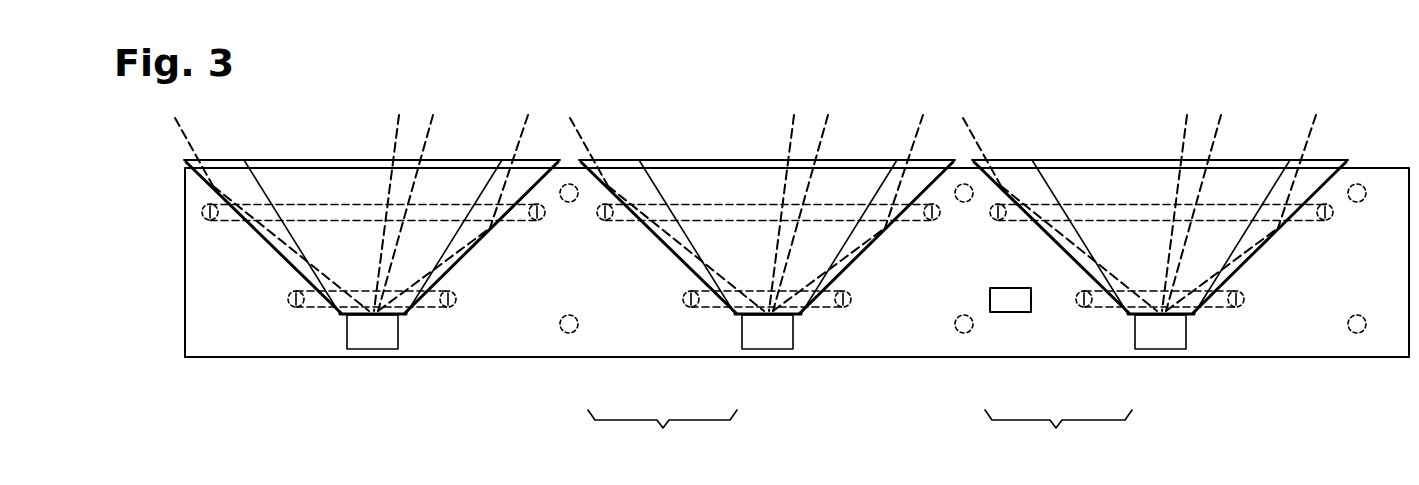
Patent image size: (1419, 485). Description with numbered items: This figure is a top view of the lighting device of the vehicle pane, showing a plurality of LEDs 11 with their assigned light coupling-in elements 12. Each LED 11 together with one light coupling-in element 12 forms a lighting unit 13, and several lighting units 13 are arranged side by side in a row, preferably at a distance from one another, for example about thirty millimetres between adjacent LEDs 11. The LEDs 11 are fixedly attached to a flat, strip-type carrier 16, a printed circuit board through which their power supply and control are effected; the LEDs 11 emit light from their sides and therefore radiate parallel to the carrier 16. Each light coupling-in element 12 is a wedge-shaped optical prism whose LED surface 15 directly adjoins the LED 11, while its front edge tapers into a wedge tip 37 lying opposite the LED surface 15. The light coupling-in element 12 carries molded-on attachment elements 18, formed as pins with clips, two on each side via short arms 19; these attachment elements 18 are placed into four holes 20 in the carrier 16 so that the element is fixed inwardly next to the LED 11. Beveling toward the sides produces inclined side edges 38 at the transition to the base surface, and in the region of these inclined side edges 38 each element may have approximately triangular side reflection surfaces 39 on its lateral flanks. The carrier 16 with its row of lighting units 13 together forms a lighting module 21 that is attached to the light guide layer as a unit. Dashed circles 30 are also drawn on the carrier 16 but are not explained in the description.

The LED 11 is at (386, 340).
The light coupling-in element 12 is at (290, 272).
The lighting unit 13 is at (860, 438).
The LED surface 15 is at (366, 322).
The carrier 16 is at (1238, 368).
The attachment element 18 is at (203, 208).
The short arm 19 is at (518, 208).
The hole 20 is at (198, 223).
The lighting module 21 is at (1273, 361).
The bore 30 is at (569, 184).
The wedge tip 37 is at (350, 160).
The inclined side edge 38 is at (278, 253).
The side reflection surface 39 is at (232, 178).